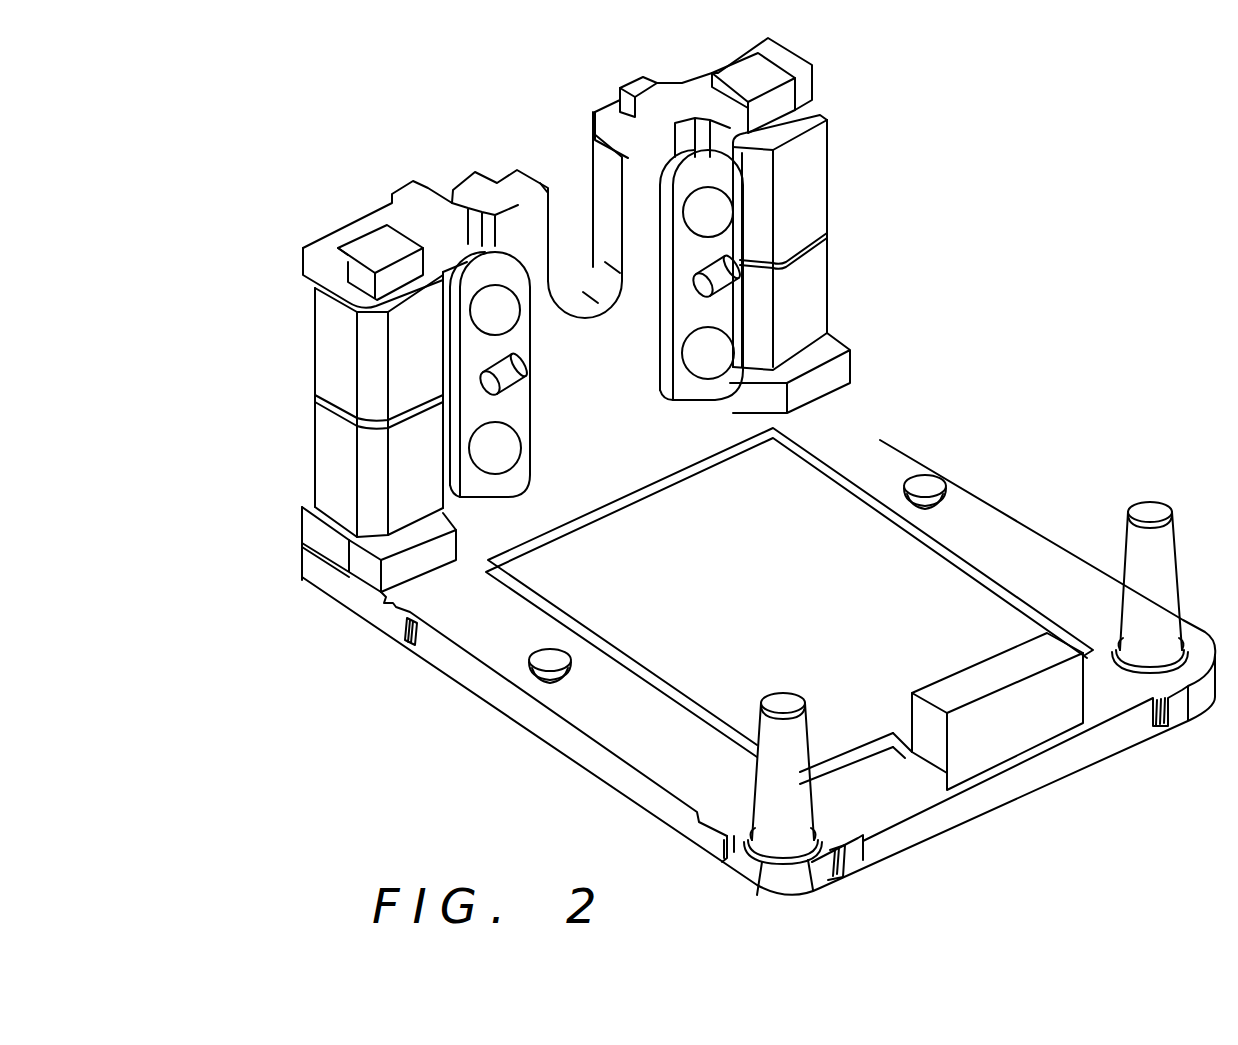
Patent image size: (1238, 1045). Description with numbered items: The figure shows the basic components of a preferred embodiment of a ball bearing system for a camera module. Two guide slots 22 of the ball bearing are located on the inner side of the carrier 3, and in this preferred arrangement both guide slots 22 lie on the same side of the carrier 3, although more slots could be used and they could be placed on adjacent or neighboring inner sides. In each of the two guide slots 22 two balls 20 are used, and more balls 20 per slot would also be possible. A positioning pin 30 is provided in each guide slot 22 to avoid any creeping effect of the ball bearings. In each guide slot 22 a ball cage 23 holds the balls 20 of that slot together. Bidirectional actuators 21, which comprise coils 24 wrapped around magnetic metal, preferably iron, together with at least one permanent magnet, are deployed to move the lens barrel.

The carrier 3 is at (880, 440).
The balls 20 is at (490, 312).
The bidirectional actuators 21 is at (232, 280).
The guide slots 22 is at (473, 235).
The ball cage 23 is at (569, 262).
The coils 24 is at (330, 348).
The positioning pin 30 is at (700, 302).